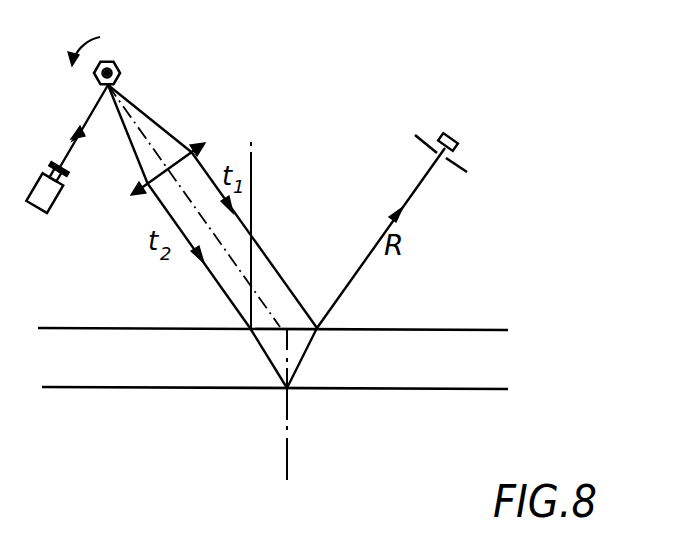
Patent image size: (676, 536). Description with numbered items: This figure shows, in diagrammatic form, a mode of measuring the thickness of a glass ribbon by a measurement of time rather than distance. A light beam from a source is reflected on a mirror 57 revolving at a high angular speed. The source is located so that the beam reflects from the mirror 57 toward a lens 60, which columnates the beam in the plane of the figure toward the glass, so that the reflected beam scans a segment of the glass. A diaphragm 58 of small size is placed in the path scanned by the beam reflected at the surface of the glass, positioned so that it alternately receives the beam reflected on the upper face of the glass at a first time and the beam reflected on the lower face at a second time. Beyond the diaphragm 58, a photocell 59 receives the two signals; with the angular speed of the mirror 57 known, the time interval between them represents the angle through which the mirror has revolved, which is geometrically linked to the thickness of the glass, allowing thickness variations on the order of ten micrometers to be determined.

The mirror 57 is at (113, 62).
The diaphragm 58 is at (450, 162).
The photocell 59 is at (458, 137).
The lens 60 is at (203, 146).